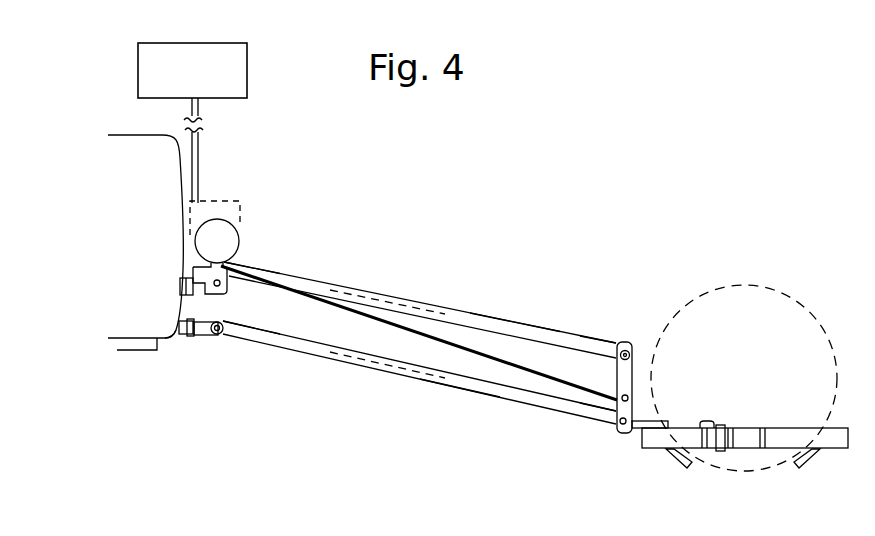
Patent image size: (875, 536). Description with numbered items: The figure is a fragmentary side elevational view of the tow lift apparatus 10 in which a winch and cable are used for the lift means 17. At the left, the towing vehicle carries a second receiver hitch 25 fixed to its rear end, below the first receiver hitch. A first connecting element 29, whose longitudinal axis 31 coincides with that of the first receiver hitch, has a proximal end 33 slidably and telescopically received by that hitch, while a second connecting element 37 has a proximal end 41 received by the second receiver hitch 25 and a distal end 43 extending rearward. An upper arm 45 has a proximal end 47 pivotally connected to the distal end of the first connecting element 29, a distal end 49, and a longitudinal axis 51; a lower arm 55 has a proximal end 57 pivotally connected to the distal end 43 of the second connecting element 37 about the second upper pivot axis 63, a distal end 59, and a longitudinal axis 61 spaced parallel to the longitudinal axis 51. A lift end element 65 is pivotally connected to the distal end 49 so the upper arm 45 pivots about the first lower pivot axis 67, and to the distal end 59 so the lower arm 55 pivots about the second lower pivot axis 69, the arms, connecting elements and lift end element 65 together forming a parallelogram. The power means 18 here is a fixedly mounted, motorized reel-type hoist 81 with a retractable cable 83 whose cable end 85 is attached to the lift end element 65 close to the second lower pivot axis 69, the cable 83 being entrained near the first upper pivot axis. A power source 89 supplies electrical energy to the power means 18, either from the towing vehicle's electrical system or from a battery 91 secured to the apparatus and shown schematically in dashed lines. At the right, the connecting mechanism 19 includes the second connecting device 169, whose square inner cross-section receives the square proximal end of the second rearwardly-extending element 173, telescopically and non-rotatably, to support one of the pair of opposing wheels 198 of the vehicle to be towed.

The tow lift apparatus 10 is at (366, 236).
The lift means 17 is at (420, 297).
The power means 18 is at (419, 384).
The connecting mechanism 19 is at (745, 389).
The second receiver hitch 25 is at (183, 335).
The first connecting element 29 is at (193, 268).
The longitudinal axis 31 is at (212, 288).
The proximal end 33 is at (180, 288).
The second connecting element 37 is at (203, 323).
The proximal end 41 is at (179, 323).
The distal end 43 is at (220, 334).
The upper arm 45 is at (528, 330).
The proximal end 47 is at (242, 265).
The distal end 49 is at (613, 345).
The longitudinal axis 51 is at (417, 305).
The lower arm 55 is at (461, 385).
The proximal end 57 is at (226, 326).
The distal end 59 is at (608, 418).
The longitudinal axis 61 is at (392, 366).
The second upper pivot axis 63 is at (214, 333).
The lift end element 65 is at (625, 340).
The first lower pivot axis 67 is at (630, 350).
The second lower pivot axis 69 is at (622, 428).
The hoist 81 is at (232, 243).
The cable 83 is at (367, 318).
The cable end 85 is at (614, 395).
The power source 89 is at (138, 70).
The battery 91 is at (234, 194).
The second connecting device 169 is at (651, 448).
The second rearwardly-extending element 173 is at (830, 448).
The opposing wheels 198 is at (778, 294).